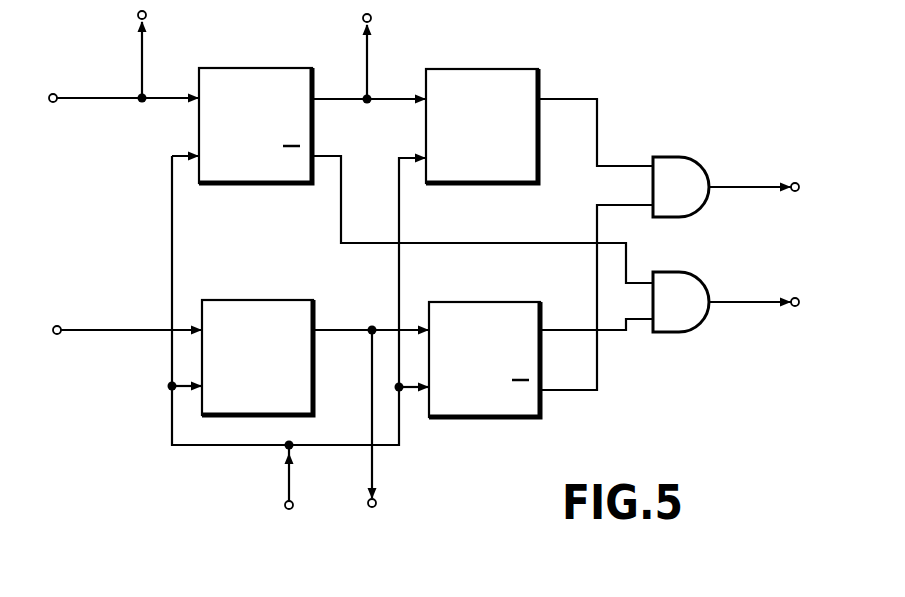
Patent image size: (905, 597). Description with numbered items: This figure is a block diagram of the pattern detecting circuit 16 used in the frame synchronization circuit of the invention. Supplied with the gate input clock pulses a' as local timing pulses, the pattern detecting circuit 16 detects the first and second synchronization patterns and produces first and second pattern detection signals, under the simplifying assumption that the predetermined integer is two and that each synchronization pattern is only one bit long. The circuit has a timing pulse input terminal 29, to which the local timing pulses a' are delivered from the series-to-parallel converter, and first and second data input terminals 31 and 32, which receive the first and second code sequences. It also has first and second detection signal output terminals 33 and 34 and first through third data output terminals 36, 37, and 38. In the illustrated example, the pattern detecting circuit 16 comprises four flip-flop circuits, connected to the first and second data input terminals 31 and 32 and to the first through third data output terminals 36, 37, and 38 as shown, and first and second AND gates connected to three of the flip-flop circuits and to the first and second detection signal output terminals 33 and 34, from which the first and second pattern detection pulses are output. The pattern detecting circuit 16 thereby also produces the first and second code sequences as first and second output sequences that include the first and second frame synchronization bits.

The pattern detecting circuit 16 is at (170, 494).
The timing pulse input terminal 29 is at (286, 508).
The first data input terminal 31 is at (72, 67).
The second data input terminal 32 is at (76, 292).
The first detection signal output terminal 33 is at (806, 152).
The second detection signal output terminal 34 is at (805, 271).
The first data output terminal 36 is at (148, 18).
The second data output terminal 37 is at (372, 508).
The third data output terminal 38 is at (373, 21).